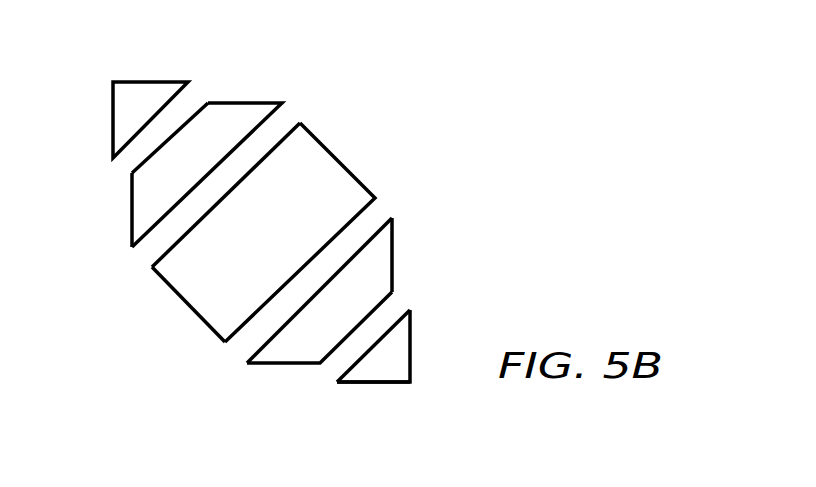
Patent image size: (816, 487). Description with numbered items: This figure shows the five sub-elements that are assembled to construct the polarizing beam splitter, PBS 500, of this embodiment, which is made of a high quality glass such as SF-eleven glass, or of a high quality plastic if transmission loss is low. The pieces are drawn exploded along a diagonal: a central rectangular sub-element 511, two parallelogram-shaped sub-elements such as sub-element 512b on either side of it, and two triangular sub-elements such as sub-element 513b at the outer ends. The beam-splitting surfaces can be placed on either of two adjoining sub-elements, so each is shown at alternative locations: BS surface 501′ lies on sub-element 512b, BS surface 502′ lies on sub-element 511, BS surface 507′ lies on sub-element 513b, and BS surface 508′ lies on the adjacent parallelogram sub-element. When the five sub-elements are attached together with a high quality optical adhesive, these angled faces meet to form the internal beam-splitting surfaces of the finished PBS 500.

The PBS 500 is at (389, 130).
The BS surface 501′ is at (279, 116).
The BS surface 502′ is at (371, 211).
The BS surface 507′ is at (203, 94).
The BS surface 508′ is at (383, 302).
The sub-element 511 is at (194, 320).
The sub-element 512b is at (129, 215).
The sub-element 513b is at (124, 81).